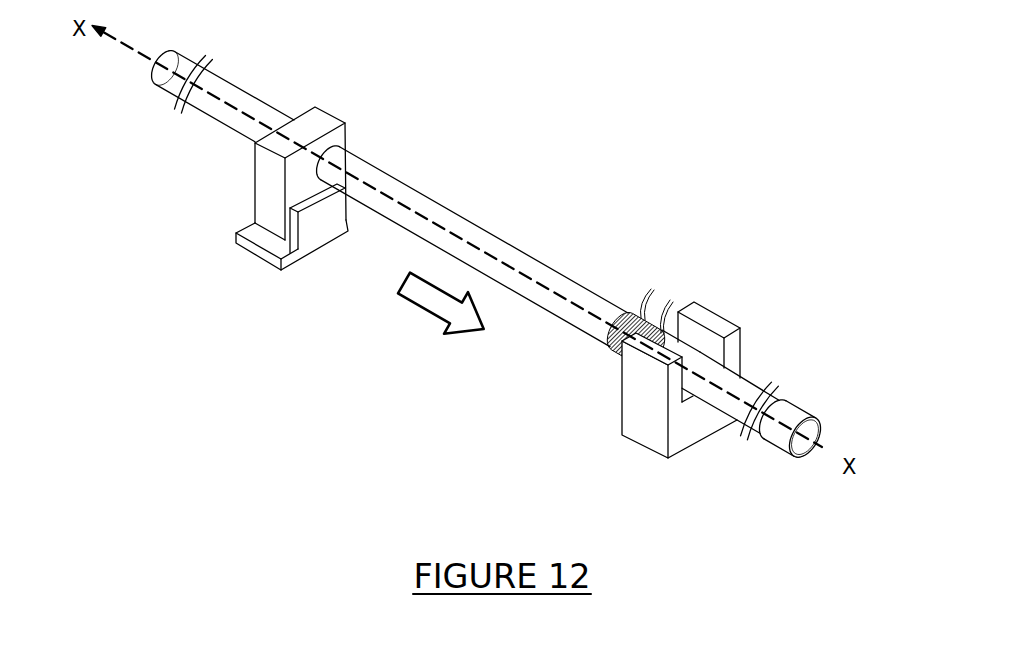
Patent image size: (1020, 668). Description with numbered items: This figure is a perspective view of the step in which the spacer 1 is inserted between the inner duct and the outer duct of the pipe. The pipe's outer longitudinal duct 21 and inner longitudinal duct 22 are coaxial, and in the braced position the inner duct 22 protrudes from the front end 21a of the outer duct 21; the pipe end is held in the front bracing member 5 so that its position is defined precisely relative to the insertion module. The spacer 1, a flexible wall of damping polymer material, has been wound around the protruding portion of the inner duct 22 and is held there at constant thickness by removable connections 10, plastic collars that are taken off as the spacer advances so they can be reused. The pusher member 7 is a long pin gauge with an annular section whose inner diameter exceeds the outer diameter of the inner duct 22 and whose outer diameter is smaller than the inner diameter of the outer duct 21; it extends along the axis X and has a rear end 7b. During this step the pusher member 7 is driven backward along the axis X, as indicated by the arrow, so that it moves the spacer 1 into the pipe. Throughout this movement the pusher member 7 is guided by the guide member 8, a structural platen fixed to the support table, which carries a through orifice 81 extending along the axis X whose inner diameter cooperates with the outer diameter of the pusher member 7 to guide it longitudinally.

The spacer 1 is at (618, 355).
The front bracing member 5 is at (681, 343).
The pusher member 7 is at (423, 193).
The rear end 7b is at (584, 354).
The guide member 8 is at (254, 170).
The through orifice 81 is at (317, 177).
The removable connections 10 is at (642, 312).
The outer longitudinal duct 21 is at (743, 382).
The front end 21a is at (662, 336).
The inner longitudinal duct 22 is at (805, 417).